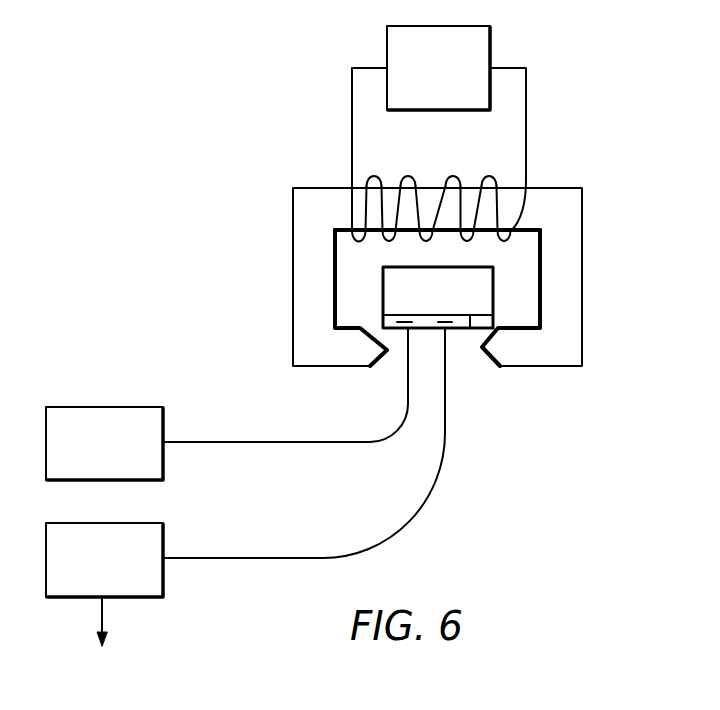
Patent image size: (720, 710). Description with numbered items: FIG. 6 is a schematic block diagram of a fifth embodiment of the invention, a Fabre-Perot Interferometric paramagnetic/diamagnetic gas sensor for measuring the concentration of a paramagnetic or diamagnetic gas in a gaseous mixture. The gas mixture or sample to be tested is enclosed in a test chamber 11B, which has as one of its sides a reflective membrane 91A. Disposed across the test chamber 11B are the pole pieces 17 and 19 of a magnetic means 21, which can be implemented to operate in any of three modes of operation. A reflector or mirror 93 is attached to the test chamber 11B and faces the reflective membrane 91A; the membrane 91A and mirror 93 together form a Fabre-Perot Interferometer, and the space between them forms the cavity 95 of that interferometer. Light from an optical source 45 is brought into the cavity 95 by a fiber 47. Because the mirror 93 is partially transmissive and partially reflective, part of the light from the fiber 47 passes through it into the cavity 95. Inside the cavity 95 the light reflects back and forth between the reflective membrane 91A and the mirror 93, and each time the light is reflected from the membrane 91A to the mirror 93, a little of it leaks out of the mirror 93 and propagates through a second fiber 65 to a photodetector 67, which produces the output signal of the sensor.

The magnetic means 21 is at (490, 196).
The pole piece 17 is at (354, 327).
The pole piece 19 is at (515, 327).
The test chamber 11B is at (493, 280).
The reflective membrane 91A is at (468, 329).
The cavity 95 is at (402, 324).
The mirror 93 is at (453, 330).
The optical source 45 is at (95, 407).
The fiber 47 is at (228, 442).
The photodetector 67 is at (135, 523).
The fiber 65 is at (243, 558).